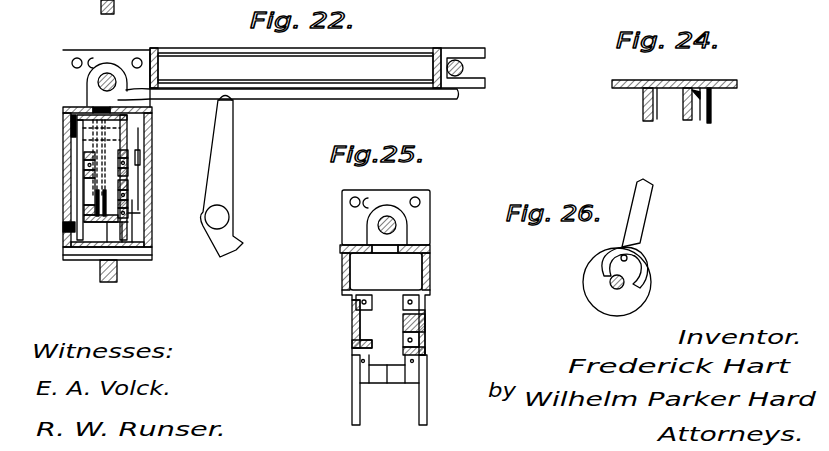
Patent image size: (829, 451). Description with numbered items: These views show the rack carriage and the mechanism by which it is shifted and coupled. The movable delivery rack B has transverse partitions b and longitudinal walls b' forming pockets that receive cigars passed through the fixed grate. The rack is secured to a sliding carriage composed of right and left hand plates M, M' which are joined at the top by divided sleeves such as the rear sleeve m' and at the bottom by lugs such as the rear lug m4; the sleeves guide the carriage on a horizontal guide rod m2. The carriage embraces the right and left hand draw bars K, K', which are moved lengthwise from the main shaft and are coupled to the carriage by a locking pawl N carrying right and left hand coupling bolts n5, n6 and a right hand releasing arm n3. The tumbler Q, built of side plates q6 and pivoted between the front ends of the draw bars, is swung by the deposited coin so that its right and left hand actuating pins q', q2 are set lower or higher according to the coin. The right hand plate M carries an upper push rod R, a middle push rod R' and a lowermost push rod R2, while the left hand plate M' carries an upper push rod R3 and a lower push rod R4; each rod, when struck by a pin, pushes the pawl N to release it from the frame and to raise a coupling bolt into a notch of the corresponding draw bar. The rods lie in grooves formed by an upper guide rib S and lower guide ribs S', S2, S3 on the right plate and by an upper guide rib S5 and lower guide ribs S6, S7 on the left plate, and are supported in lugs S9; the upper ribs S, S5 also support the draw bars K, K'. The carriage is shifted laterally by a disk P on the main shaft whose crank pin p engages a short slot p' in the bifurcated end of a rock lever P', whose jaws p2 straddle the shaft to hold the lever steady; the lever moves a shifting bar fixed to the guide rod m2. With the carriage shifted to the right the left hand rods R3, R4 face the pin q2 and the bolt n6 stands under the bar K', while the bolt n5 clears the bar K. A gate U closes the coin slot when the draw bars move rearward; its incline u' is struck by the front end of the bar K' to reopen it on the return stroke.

In FIG. 22, the movable delivery rack B is at (377, 55).
In FIG. 22, the transverse partitions b is at (299, 70).
In FIG. 22, the longitudinal walls b' is at (300, 46).
In FIG. 22, the left hand coupling bolt n6 is at (462, 54).
In FIG. 22, the right hand coupling bolt n5 is at (468, 66).
In FIG. 22, the right hand releasing arm n3 is at (308, 92).
In FIG. 22, the rear sleeve m' is at (106, 60).
In FIG. 25, the rear sleeve m' is at (386, 210).
In FIG. 22, the guide rod m2 is at (98, 84).
In FIG. 25, the guide rod m2 is at (378, 226).
In FIG. 22, the rear lug m4 is at (116, 240).
In FIG. 25, the rear lug m4 is at (395, 386).
In FIG. 22, the right hand draw bar K is at (156, 180).
In FIG. 24, the right hand draw bar K is at (634, 104).
In FIG. 22, the left hand draw bar K' is at (88, 177).
In FIG. 24, the left hand draw bar K' is at (707, 105).
In FIG. 22, the right hand carriage plate M is at (150, 177).
In FIG. 25, the right hand carriage plate M is at (439, 304).
In FIG. 22, the left hand carriage plate M' is at (77, 177).
In FIG. 25, the left hand carriage plate M' is at (365, 300).
In FIG. 22, the upper push rod R is at (105, 157).
In FIG. 25, the upper push rod R is at (442, 286).
In FIG. 22, the middle push rod R' is at (155, 197).
In FIG. 25, the middle push rod R' is at (441, 339).
In FIG. 22, the lowermost push rod R2 is at (114, 182).
In FIG. 25, the lowermost push rod R2 is at (418, 361).
In FIG. 22, the upper left push rod R3 is at (84, 165).
In FIG. 25, the upper left push rod R3 is at (354, 297).
In FIG. 25, the lower left push rod R4 is at (360, 361).
In FIG. 22, the tumbler Q is at (84, 205).
In FIG. 22, the right hand actuating pin q' is at (148, 221).
In FIG. 22, the left hand actuating pin q2 is at (88, 222).
In FIG. 22, the tumbler side plates q6 is at (95, 232).
In FIG. 22, the locking pawl N is at (120, 274).
In FIG. 26, the disk P is at (628, 282).
In FIG. 22, the rock lever P' is at (228, 177).
In FIG. 26, the rock lever P' is at (649, 213).
In FIG. 26, the crank pin p is at (645, 258).
In FIG. 26, the short slot p' is at (642, 253).
In FIG. 26, the jaws p2 is at (623, 268).
In FIG. 24, the gate U is at (735, 88).
In FIG. 24, the incline u' is at (735, 97).
In FIG. 25, the upper guide rib S is at (397, 275).
In FIG. 25, the lower guide rib S' is at (404, 304).
In FIG. 25, the lower guide rib S2 is at (406, 322).
In FIG. 25, the lower guide rib S3 is at (403, 340).
In FIG. 25, the upper guide rib S5 is at (386, 271).
In FIG. 25, the lower guide rib S6 is at (373, 282).
In FIG. 25, the lower guide rib S7 is at (374, 320).
In FIG. 25, the lugs S9 is at (420, 300).